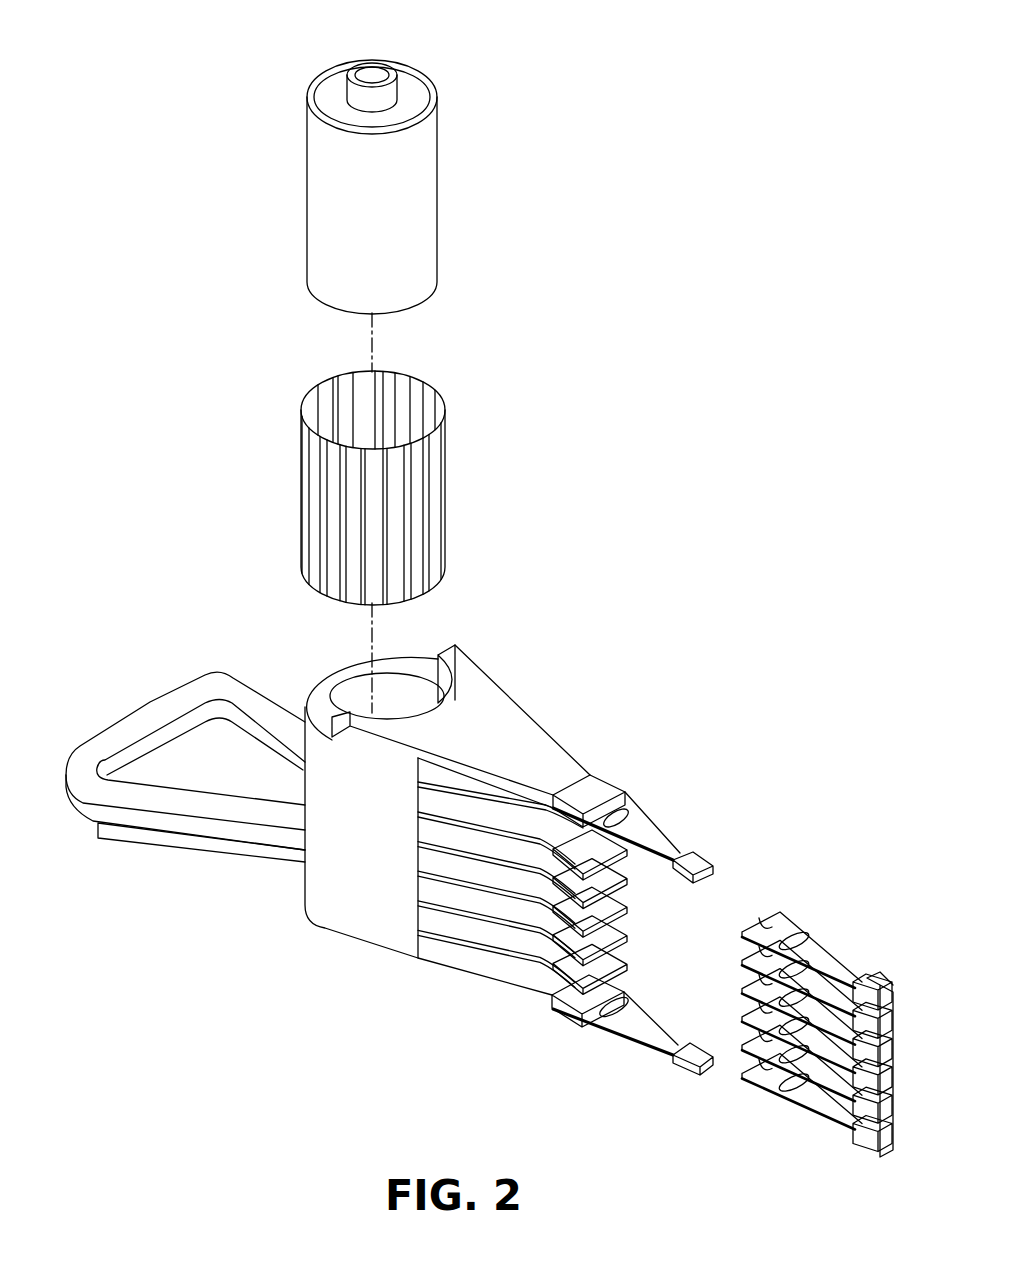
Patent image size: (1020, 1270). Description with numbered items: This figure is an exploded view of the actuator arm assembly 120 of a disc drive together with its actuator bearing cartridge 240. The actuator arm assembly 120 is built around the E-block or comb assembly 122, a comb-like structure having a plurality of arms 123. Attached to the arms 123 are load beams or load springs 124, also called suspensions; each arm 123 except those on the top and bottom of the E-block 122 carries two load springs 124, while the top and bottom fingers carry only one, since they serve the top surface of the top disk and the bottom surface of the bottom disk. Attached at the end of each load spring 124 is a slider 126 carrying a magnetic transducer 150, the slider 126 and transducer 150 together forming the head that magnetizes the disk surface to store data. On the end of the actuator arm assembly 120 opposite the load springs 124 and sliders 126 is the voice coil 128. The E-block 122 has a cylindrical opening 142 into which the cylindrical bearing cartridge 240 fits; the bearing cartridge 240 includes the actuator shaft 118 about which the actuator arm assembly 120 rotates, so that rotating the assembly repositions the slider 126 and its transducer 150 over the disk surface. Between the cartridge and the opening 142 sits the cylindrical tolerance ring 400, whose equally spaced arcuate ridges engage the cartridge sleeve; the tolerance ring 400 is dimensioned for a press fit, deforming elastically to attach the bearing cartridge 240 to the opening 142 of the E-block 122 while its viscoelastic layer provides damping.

The actuator shaft 118 is at (375, 61).
The bearing cartridge 240 is at (437, 187).
The tolerance ring 400 is at (445, 490).
The cylindrical opening 142 is at (421, 662).
The voice coil 128 is at (137, 710).
The actuator arm assembly 120 is at (429, 797).
The arms 123 is at (527, 733).
The load springs 124 is at (638, 832).
The magnetic transducer 150 is at (717, 866).
The slider 126 is at (735, 903).
The E-block 122 is at (488, 984).